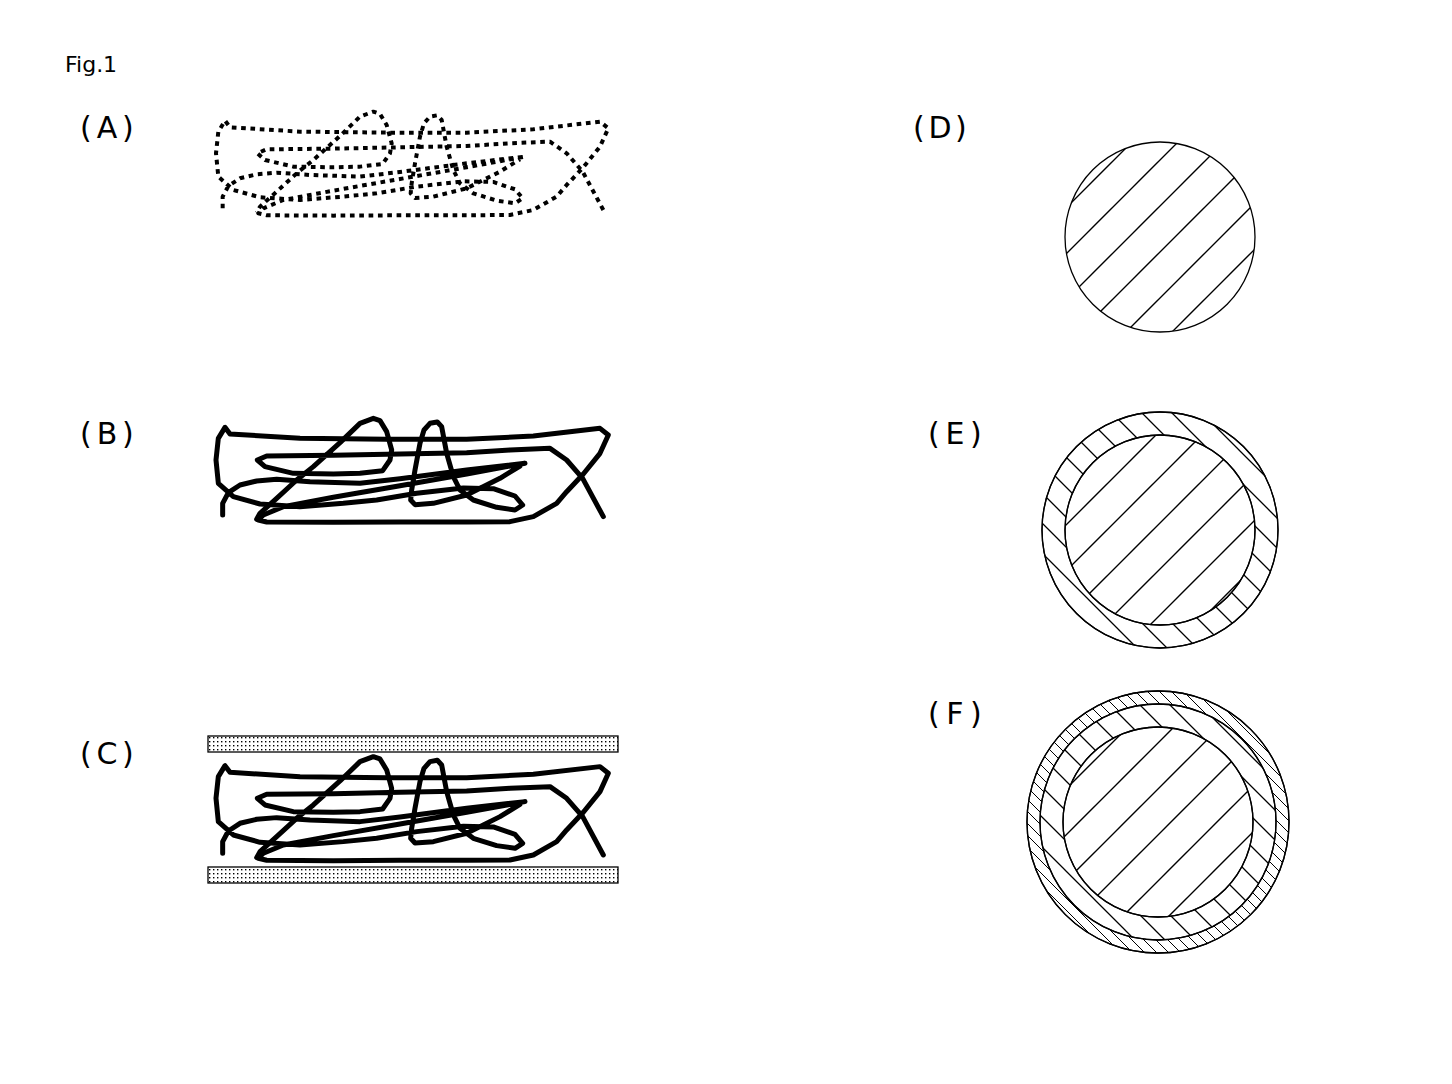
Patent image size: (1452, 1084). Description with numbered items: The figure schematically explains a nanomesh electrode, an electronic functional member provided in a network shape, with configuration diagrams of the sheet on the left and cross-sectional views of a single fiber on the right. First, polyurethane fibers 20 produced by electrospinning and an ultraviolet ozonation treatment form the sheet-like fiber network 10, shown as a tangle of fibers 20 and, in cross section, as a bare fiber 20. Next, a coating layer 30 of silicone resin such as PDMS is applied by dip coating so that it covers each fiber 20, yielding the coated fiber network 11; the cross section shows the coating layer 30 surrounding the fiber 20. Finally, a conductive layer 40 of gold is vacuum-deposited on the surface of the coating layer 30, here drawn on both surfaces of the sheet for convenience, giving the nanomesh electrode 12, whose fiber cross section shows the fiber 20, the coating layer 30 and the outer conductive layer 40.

The fiber network 10 is at (605, 165).
The coated fiber network 11 is at (605, 471).
The nanomesh electrode 12 is at (605, 808).
The fiber 20 is at (1222, 288).
The coating layer 30 is at (1276, 543).
The conductive layer 40 is at (620, 745).